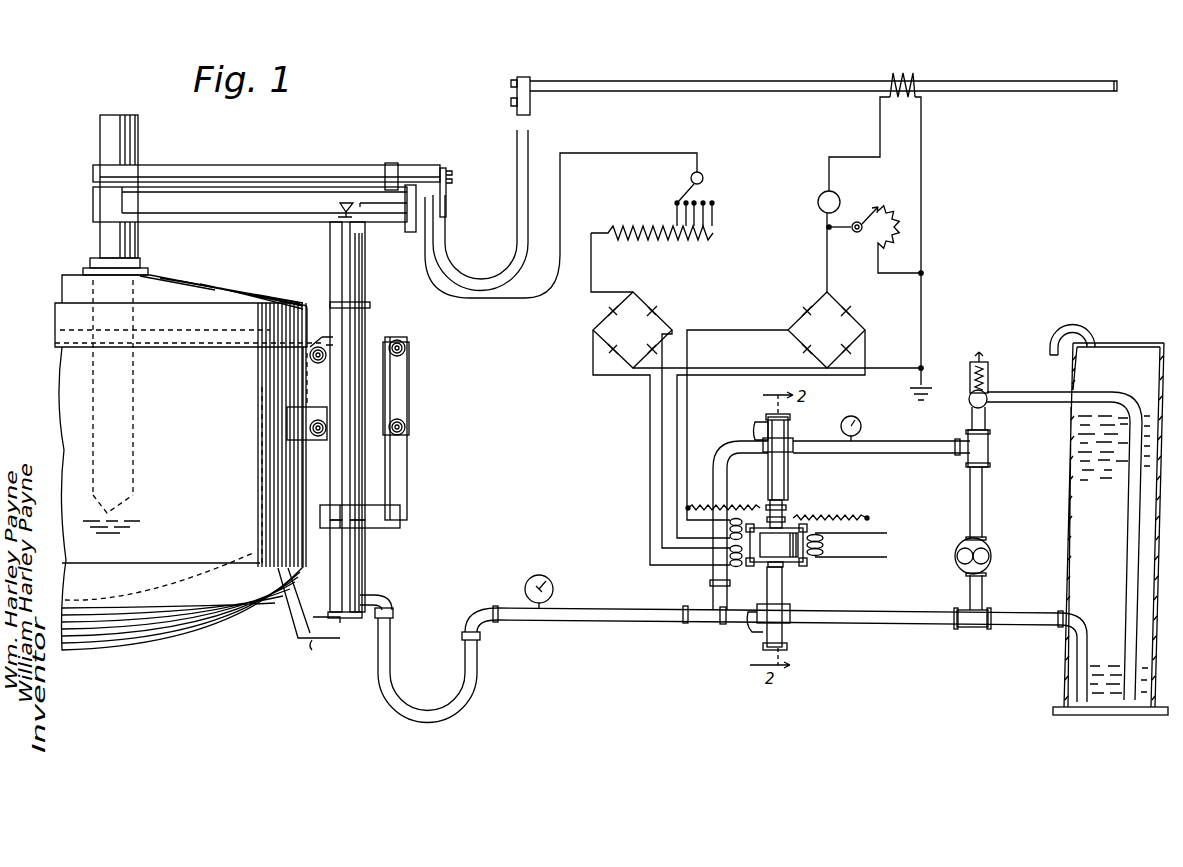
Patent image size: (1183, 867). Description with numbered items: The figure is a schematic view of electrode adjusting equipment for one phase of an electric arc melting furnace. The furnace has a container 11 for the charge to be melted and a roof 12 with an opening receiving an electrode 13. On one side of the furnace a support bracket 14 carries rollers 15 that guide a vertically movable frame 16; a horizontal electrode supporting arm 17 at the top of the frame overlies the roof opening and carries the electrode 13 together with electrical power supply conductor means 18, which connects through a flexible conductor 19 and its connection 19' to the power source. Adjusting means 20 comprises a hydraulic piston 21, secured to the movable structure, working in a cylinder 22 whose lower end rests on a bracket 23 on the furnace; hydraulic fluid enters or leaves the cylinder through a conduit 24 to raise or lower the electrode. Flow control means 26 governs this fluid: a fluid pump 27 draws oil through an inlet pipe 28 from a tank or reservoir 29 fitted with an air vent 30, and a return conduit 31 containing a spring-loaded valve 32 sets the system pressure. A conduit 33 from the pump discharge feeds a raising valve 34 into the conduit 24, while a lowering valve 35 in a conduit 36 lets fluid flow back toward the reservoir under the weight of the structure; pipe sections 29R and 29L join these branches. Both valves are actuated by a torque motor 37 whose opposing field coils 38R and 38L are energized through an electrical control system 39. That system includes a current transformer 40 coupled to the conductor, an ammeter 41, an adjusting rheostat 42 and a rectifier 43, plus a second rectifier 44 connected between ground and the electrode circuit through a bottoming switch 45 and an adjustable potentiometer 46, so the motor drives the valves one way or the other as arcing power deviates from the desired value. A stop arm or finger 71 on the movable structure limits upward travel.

The container 11 is at (190, 659).
The roof 12 is at (232, 292).
The electrode 13 is at (112, 127).
The support bracket 14 is at (402, 392).
The rollers 15 is at (310, 357).
The frame 16 is at (385, 475).
The electrode supporting arm 17 is at (254, 208).
The electrical power supply conductor means 18 is at (297, 172).
The flexible conductor 19 is at (823, 71).
The bus bar connector 19' is at (499, 101).
The adjusting means 20 is at (375, 680).
The piston 21 is at (343, 270).
The cylinder 22 is at (355, 568).
The bracket 23 is at (312, 640).
The conduit 24 is at (525, 618).
The flow control means 26 is at (477, 688).
The fluid pump 27 is at (991, 548).
The inlet pipe 28 is at (1027, 626).
The tank or reservoir 29 is at (1070, 472).
The right pipe 29R is at (722, 455).
The left pipe fitting 29L is at (733, 622).
The air vent 30 is at (1076, 326).
The return conduit 31 is at (1038, 400).
The spring-loaded valve 32 is at (970, 400).
The conduit 33 is at (923, 455).
The raising valve 34 is at (787, 465).
The lowering valve 35 is at (783, 597).
The conduit 36 is at (813, 562).
The torque motor 37 is at (776, 533).
The field coil 38R is at (728, 530).
The field coil 38L is at (728, 556).
The electrical control system 39 is at (931, 316).
The current transformer 40 is at (913, 73).
The ammeter 41 is at (840, 193).
The adjusting rheostat 42 is at (880, 240).
The rectifier 43 is at (826, 330).
The rectifier 44 is at (632, 330).
The bottoming switch 45 is at (333, 208).
The adjustable potentiometer 46 is at (653, 241).
The stop arm or finger 71 is at (400, 524).